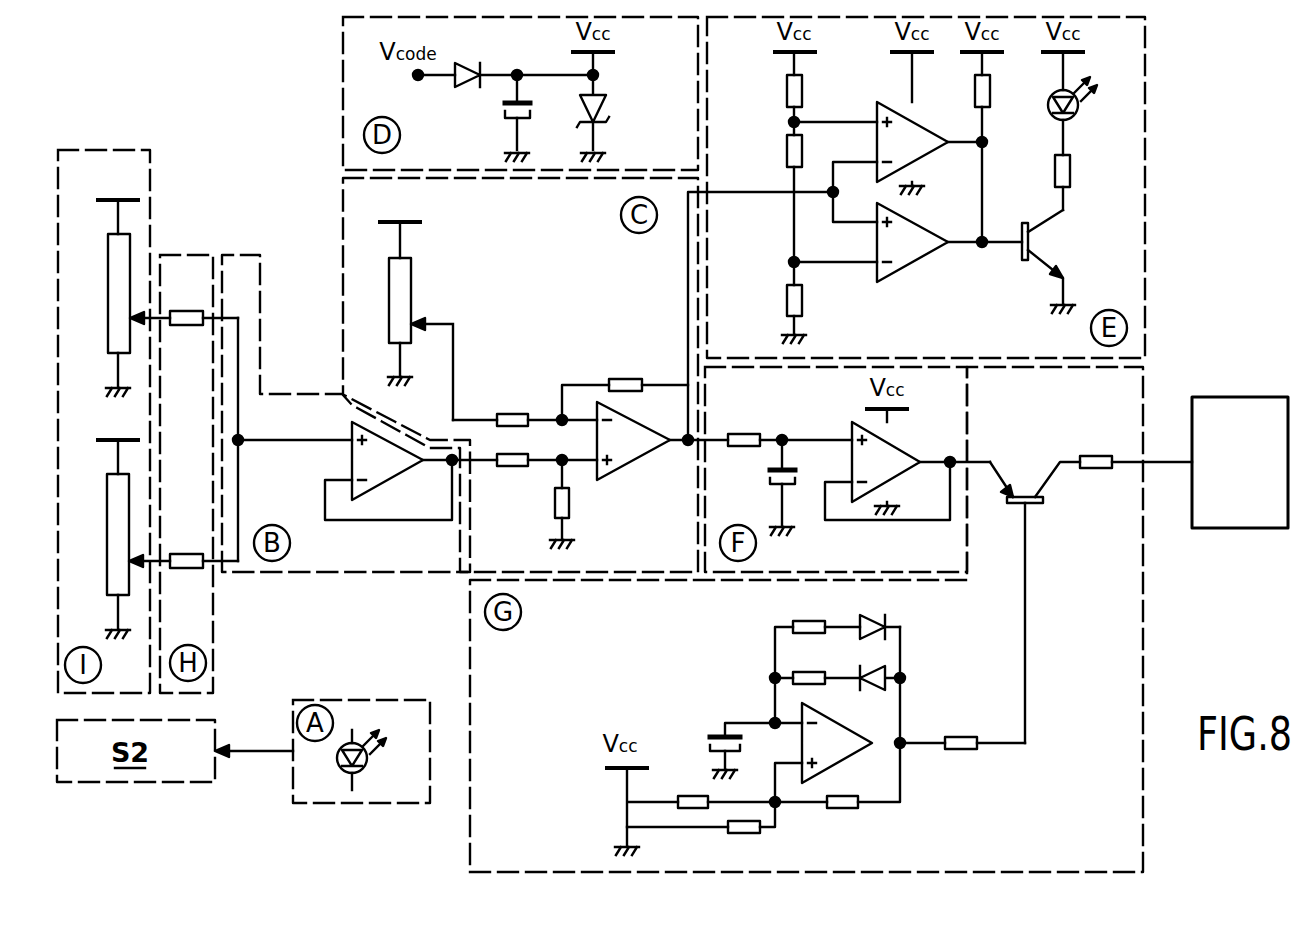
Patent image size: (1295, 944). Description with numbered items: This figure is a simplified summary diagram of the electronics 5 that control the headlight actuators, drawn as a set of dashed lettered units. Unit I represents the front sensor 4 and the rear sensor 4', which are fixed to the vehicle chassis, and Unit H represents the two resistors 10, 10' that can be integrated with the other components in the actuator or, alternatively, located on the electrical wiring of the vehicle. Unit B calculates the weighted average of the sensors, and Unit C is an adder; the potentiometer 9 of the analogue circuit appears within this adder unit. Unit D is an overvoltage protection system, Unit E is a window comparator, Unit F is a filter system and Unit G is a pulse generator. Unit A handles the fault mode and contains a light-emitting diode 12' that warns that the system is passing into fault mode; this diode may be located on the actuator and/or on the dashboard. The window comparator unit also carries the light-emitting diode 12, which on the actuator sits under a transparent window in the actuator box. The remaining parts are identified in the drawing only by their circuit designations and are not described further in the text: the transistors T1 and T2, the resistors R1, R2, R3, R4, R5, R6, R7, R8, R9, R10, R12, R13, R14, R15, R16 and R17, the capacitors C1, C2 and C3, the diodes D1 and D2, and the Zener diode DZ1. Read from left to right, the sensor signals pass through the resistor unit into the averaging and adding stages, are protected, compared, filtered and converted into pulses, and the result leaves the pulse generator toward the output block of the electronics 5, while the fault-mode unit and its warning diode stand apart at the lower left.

The front sensor 4 is at (105, 283).
The rear sensor 4' is at (103, 524).
The potentiometer 9 is at (389, 287).
The resistor 10 is at (184, 314).
The resistor 10' is at (183, 557).
The light-emitting diode 12 is at (1088, 103).
The light-emitting diode 12' is at (385, 760).
The electronic control system 5 is at (1226, 480).
The transistor T1 is at (1048, 261).
The transistor T2 is at (1035, 595).
The resistor R1 is at (774, 79).
The resistor R2 is at (774, 196).
The resistor R3 is at (811, 314).
The resistor R4 is at (1001, 147).
The resistor R5 is at (1080, 182).
The resistor R6 is at (790, 423).
The resistor R7 is at (1136, 445).
The resistor R8 is at (826, 608).
The resistor R9 is at (826, 659).
The resistor R10 is at (691, 787).
The resistor R12 is at (841, 817).
The resistor R13 is at (981, 759).
The resistor R14 is at (542, 476).
The resistor R15 is at (525, 403).
The resistor R16 is at (662, 661).
The resistor R17 is at (625, 384).
The capacitor C1 is at (762, 487).
The capacitor C2 is at (721, 750).
The capacitor C3 is at (499, 118).
The diode D1 is at (674, 333).
The diode D2 is at (876, 693).
The zener diode DZ1 is at (620, 118).